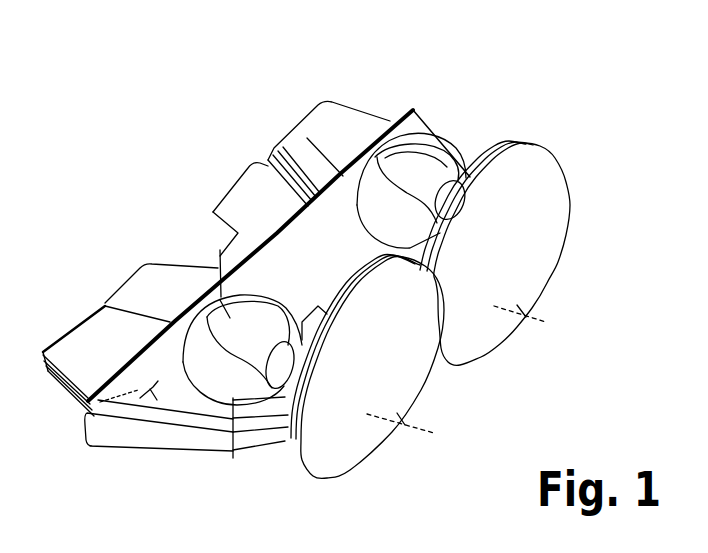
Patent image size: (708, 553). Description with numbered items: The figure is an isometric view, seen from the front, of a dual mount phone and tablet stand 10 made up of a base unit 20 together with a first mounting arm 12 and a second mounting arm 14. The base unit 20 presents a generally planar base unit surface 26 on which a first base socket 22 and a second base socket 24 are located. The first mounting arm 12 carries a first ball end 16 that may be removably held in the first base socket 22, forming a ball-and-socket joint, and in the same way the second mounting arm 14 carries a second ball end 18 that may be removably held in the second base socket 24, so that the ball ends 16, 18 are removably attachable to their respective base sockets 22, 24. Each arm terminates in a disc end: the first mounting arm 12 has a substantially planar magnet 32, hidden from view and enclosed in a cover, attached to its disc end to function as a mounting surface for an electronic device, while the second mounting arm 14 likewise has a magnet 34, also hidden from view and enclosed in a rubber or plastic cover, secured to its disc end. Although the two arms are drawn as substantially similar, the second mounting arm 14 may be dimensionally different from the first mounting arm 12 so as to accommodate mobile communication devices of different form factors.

The dual mount phone and tablet stand 10 is at (114, 141).
The first mounting arm 12 is at (562, 172).
The second mounting arm 14 is at (300, 474).
The first ball end 16 is at (432, 158).
The second ball end 18 is at (220, 258).
The base unit 20 is at (413, 110).
The first base socket 22 is at (285, 137).
The second base socket 24 is at (233, 448).
The base unit surface 26 is at (82, 424).
The magnet 32 is at (541, 324).
The magnet 34 is at (421, 431).